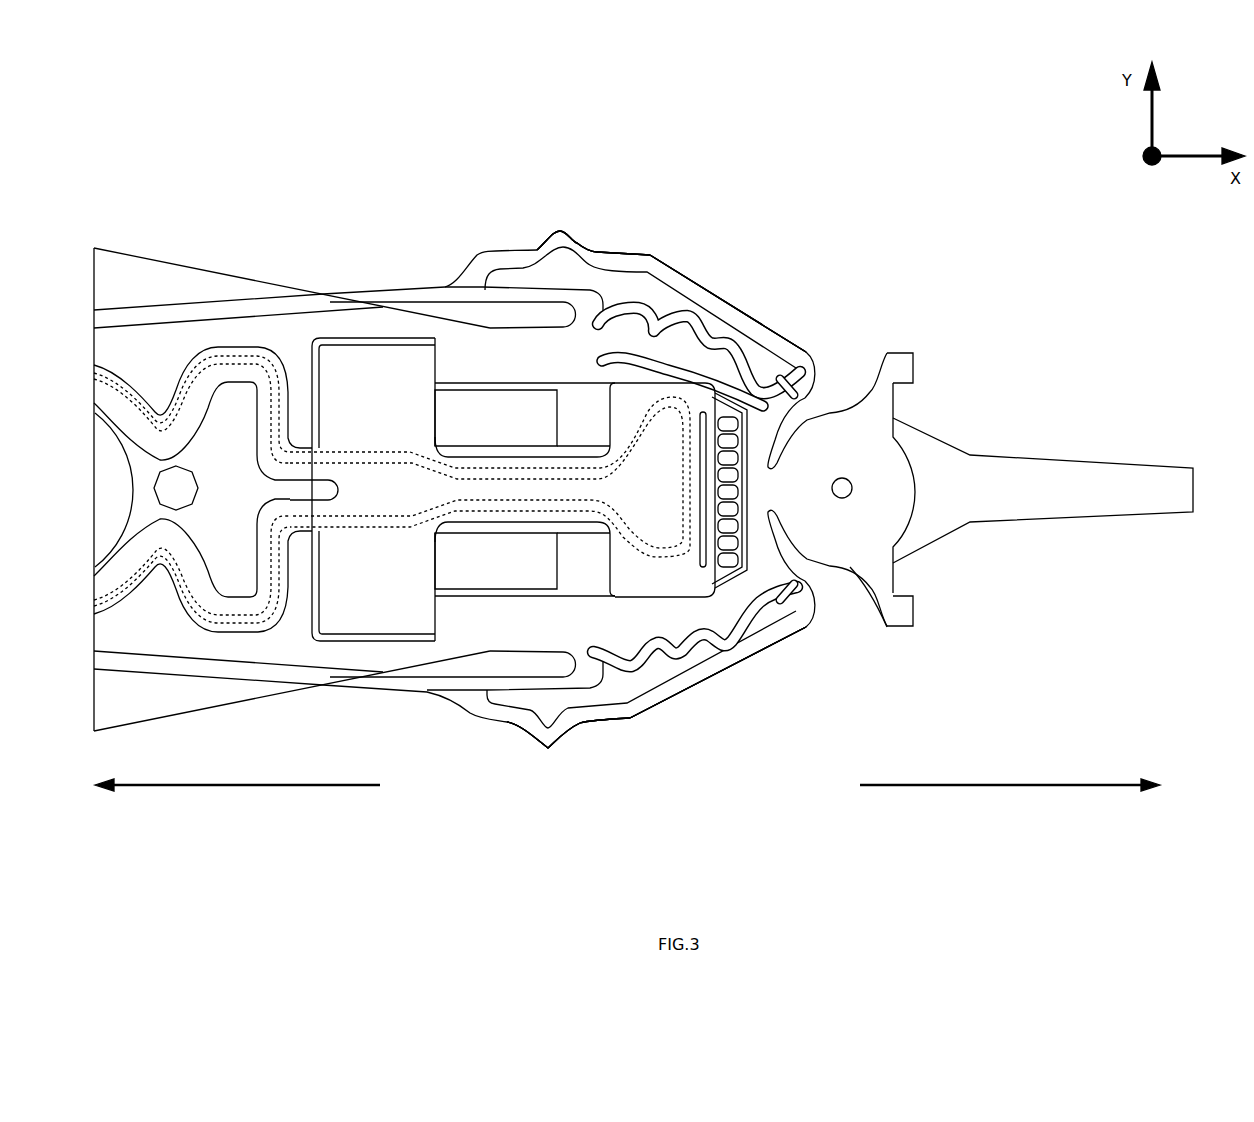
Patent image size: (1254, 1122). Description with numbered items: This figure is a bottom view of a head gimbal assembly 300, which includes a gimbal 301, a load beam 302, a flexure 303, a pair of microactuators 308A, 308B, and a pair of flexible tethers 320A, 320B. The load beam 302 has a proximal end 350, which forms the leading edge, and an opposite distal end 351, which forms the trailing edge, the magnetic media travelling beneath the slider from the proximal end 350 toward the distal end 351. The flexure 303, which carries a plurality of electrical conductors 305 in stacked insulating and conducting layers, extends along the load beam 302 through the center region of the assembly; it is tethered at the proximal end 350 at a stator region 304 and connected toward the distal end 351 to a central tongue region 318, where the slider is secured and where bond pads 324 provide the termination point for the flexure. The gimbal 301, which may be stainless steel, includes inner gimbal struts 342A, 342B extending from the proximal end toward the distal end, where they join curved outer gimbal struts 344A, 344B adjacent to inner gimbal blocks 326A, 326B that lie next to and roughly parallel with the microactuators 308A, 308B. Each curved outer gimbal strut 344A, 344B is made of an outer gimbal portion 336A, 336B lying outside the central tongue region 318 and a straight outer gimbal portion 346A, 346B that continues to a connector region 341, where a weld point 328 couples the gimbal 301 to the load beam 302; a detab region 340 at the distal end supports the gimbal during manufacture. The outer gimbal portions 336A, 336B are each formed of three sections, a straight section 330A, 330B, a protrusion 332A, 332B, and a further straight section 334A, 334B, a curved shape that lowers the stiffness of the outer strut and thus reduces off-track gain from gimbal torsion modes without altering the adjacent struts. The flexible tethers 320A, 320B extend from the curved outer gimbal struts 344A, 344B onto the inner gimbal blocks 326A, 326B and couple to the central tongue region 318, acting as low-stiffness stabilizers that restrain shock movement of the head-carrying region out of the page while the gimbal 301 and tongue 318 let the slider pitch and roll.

The head gimbal assembly 300 is at (378, 95).
The gimbal 301 is at (923, 328).
The load beam 302 is at (148, 295).
The flexure 303 is at (237, 335).
The stator region 304 is at (340, 363).
The electrical conductors 305 is at (253, 626).
The microactuator 308A is at (475, 410).
The microactuator 308B is at (463, 570).
The central tongue region 318 is at (620, 405).
The flexible tether 320A is at (737, 607).
The flexible tether 320B is at (792, 383).
The bond pads 324 is at (733, 557).
The inner gimbal block 326A is at (490, 258).
The inner gimbal block 326B is at (492, 640).
The weld point 328 is at (852, 489).
The straight section 330A is at (498, 256).
The straight section 330B is at (520, 640).
The protrusion 332A is at (570, 243).
The protrusion 332B is at (548, 732).
The straight section 334A is at (630, 262).
The straight section 334B is at (612, 718).
The outer gimbal portion 336A is at (650, 160).
The outer gimbal portion 336B is at (612, 795).
The detab region 340 is at (916, 363).
The connector region 341 is at (867, 540).
The inner gimbal strut 342A is at (378, 300).
The inner gimbal strut 342B is at (337, 680).
The curved outer gimbal strut 344A is at (725, 105).
The curved outer gimbal strut 344B is at (714, 852).
The straight outer gimbal portion 346A is at (727, 307).
The straight outer gimbal portion 346B is at (715, 672).
The proximal end 350 is at (237, 818).
The distal end 351 is at (1010, 807).